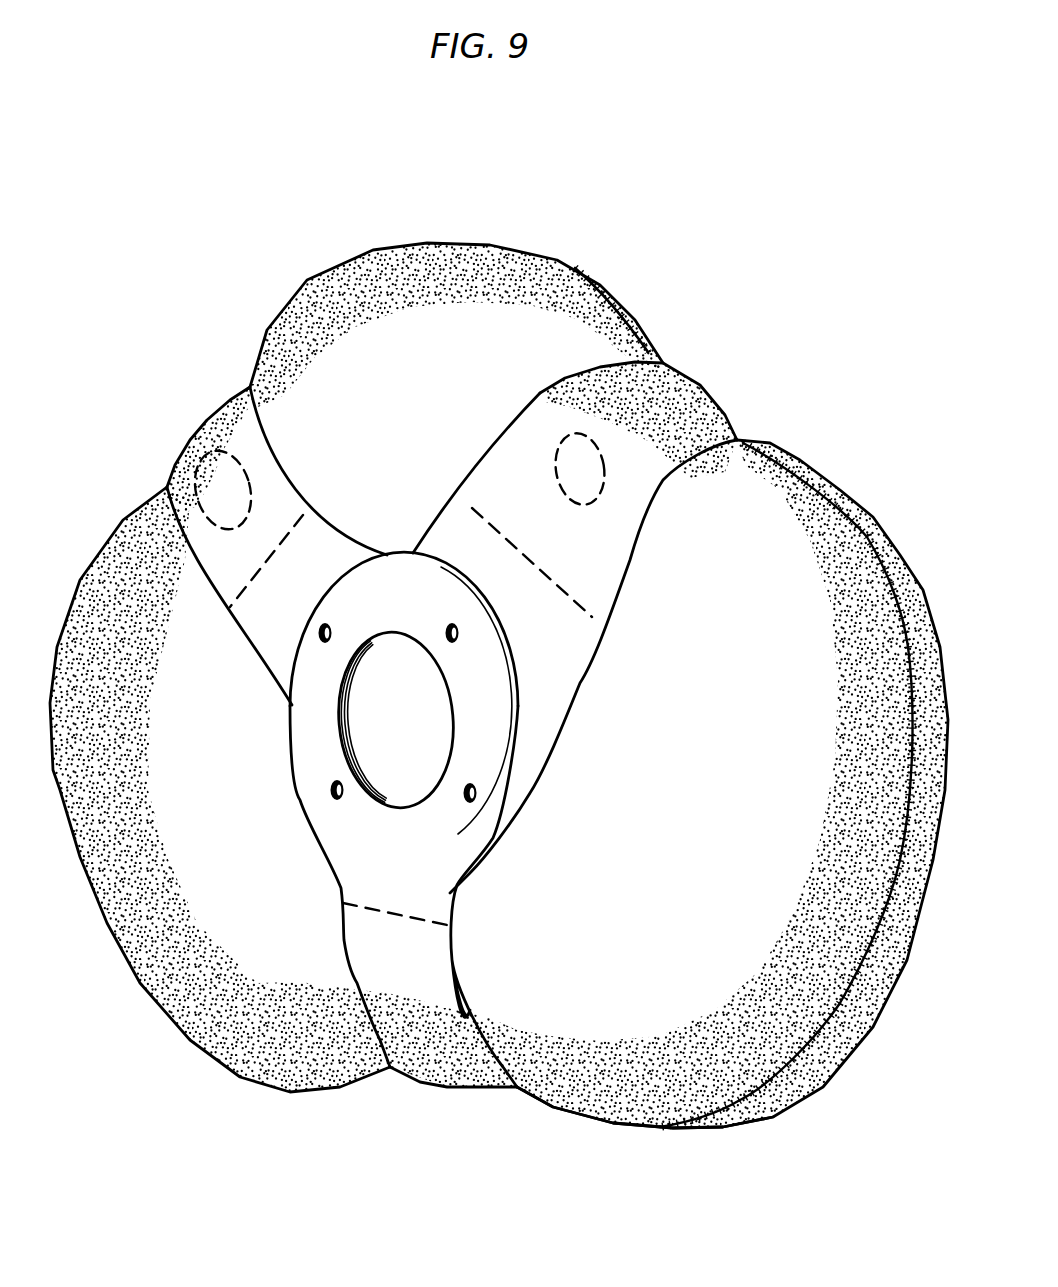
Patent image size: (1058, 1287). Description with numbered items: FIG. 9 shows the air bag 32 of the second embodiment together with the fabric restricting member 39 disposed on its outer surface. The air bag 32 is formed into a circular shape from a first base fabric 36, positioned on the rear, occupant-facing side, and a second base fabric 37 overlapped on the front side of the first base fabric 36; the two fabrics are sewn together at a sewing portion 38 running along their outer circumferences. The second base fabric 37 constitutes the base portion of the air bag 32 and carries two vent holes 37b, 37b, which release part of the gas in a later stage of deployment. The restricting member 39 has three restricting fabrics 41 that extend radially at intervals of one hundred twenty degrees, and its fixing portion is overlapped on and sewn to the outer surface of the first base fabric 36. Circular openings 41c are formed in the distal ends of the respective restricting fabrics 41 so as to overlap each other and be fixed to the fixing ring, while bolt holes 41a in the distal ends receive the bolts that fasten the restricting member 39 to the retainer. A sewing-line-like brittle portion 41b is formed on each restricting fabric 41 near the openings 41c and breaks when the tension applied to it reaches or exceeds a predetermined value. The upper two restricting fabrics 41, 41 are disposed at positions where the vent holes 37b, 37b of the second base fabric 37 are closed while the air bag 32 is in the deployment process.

The air bag 32 is at (508, 240).
The first base fabric 36 is at (843, 1037).
The second base fabric 37 is at (653, 1087).
The sewing portion 38 is at (870, 530).
The fabric restricting member 39 is at (585, 686).
The restricting fabric 41 is at (500, 427).
The bolt hole 41a is at (317, 627).
The brittle portion 41b is at (253, 577).
The circular opening 41c is at (450, 738).
The vent hole 37b is at (250, 481).